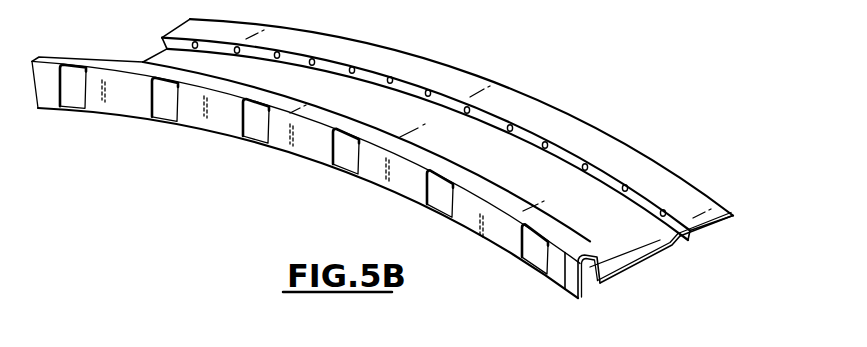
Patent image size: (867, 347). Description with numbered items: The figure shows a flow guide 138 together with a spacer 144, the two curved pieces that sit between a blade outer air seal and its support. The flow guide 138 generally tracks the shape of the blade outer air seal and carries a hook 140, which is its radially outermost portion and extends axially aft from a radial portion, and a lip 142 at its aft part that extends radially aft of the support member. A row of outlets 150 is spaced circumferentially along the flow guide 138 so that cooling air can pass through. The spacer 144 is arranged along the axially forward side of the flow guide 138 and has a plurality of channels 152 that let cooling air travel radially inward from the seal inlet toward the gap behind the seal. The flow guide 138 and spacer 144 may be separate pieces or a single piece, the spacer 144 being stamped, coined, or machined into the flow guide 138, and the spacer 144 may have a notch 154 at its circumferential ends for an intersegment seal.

The flow guide 138 is at (557, 124).
The hook 140 is at (589, 263).
The lip 142 is at (723, 228).
The spacer 144 is at (122, 101).
The outlets 150 is at (628, 189).
The channels 152 is at (530, 263).
The notch 154 is at (655, 259).